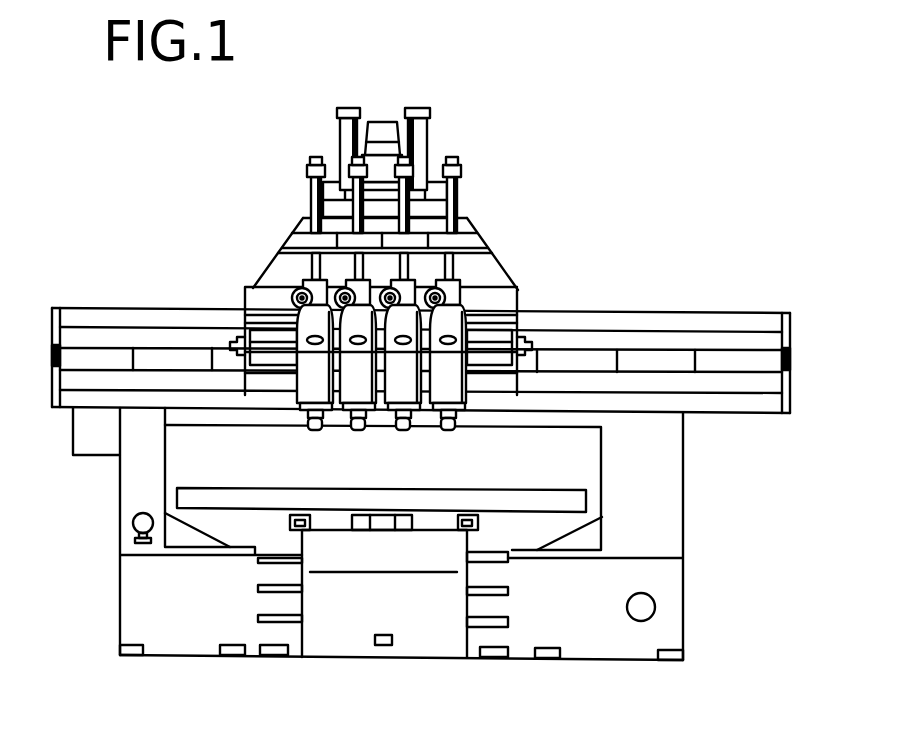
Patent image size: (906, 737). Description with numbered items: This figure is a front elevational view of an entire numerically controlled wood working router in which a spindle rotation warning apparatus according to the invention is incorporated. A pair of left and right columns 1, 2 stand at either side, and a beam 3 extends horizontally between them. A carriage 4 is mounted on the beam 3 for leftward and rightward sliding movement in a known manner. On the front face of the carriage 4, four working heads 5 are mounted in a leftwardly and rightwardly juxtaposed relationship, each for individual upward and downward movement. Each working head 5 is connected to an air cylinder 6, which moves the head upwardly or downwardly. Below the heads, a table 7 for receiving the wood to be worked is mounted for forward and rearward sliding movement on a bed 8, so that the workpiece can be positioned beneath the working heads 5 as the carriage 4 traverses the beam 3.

The left column 1 is at (142, 485).
The right column 2 is at (661, 502).
The beam 3 is at (686, 312).
The carriage 4 is at (495, 262).
The working heads 5 is at (360, 365).
The air cylinder 6 is at (348, 180).
The table 7 is at (350, 502).
The bed 8 is at (417, 623).